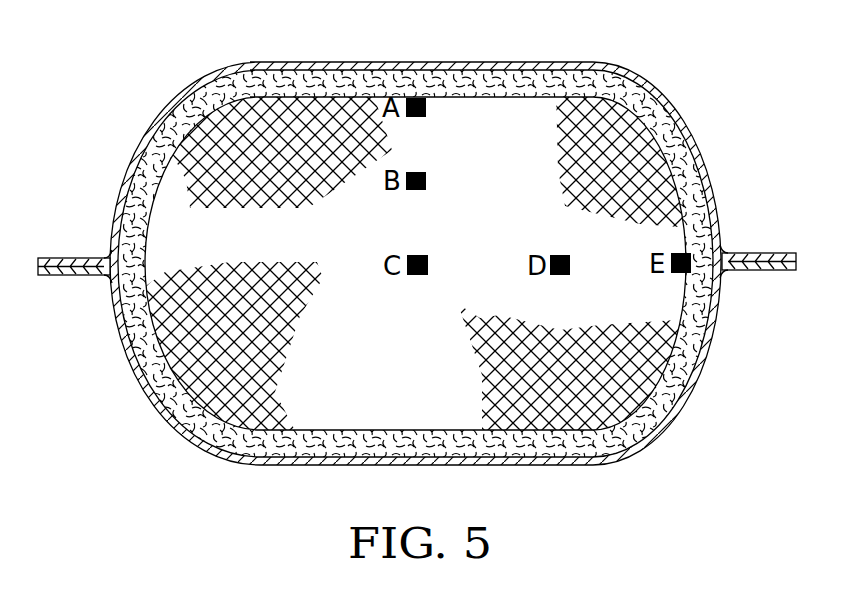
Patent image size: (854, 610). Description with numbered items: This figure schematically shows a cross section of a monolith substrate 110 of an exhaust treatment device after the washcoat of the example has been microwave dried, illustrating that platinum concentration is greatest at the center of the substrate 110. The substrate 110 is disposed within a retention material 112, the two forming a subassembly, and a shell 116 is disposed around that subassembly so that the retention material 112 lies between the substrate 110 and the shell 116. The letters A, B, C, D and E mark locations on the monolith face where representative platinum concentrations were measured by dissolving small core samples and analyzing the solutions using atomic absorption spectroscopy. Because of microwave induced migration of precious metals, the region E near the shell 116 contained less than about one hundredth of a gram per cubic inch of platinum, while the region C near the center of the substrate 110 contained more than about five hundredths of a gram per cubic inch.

The substrate 110 is at (620, 133).
The retention material 112 is at (204, 100).
The shell 116 is at (318, 62).